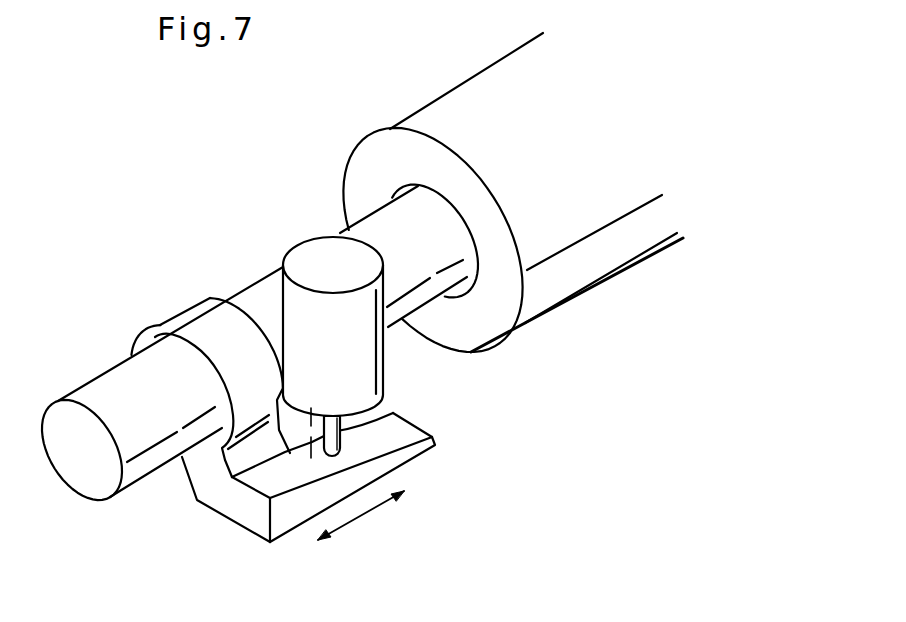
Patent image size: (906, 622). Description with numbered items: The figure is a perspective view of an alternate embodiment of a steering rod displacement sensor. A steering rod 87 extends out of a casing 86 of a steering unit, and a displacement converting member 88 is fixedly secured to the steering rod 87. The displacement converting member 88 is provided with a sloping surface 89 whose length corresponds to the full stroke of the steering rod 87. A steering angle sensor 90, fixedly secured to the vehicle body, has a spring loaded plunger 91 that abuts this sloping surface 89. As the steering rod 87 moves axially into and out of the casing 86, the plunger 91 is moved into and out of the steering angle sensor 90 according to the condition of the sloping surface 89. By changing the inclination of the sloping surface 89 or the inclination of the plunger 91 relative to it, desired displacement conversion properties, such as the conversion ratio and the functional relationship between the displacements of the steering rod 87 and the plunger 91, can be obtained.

The casing 86 is at (466, 83).
The steering rod 87 is at (130, 487).
The displacement converting member 88 is at (206, 504).
The sloping surface 89 is at (372, 451).
The steering angle sensor 90 is at (347, 357).
The spring loaded plunger 91 is at (395, 416).